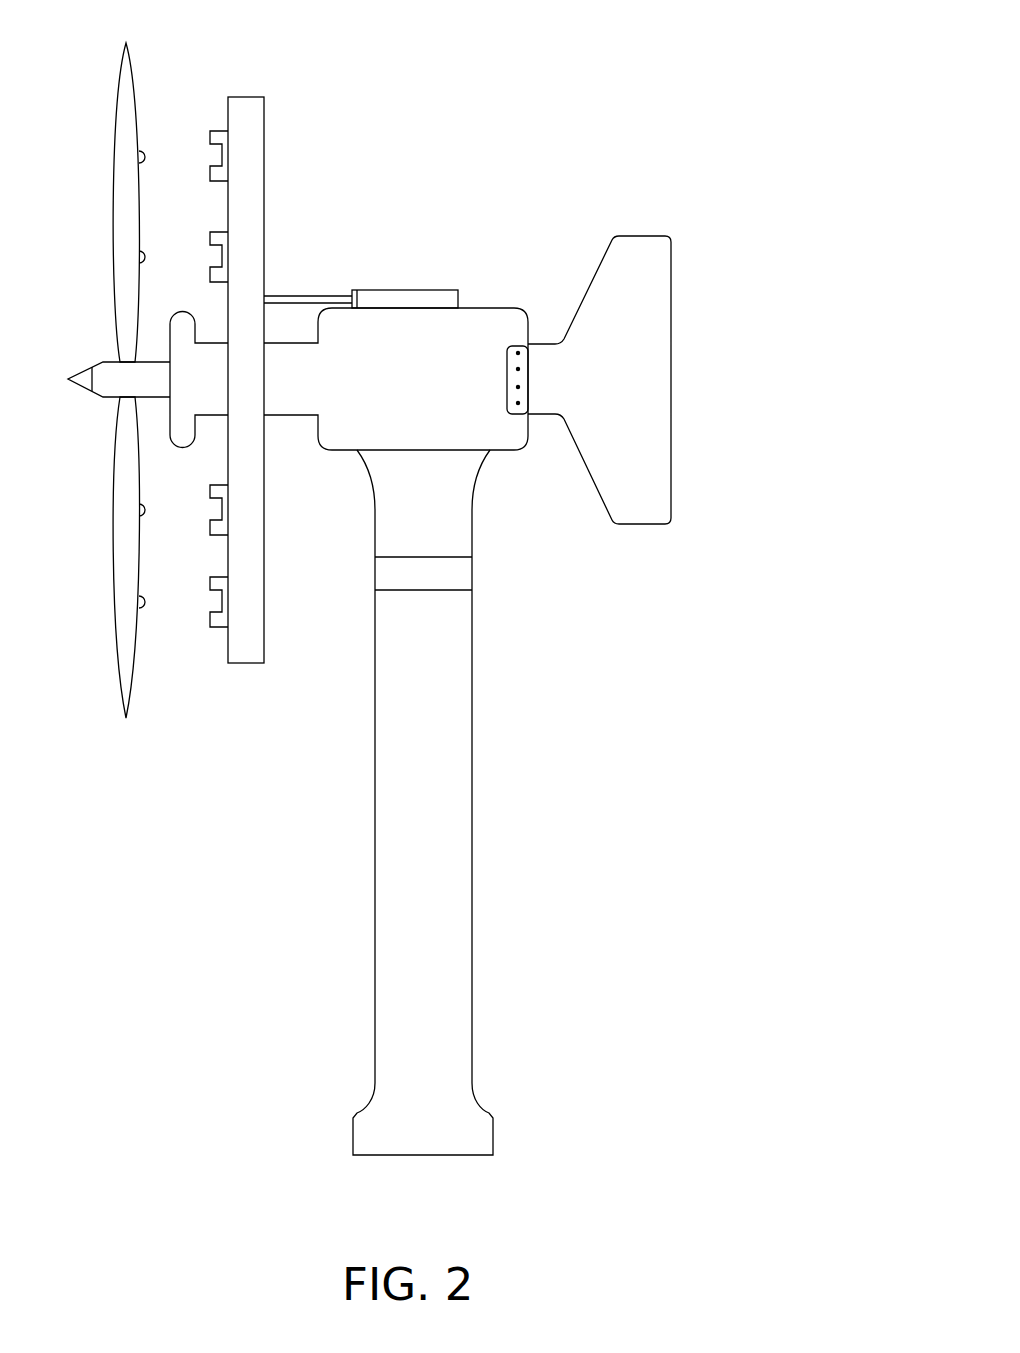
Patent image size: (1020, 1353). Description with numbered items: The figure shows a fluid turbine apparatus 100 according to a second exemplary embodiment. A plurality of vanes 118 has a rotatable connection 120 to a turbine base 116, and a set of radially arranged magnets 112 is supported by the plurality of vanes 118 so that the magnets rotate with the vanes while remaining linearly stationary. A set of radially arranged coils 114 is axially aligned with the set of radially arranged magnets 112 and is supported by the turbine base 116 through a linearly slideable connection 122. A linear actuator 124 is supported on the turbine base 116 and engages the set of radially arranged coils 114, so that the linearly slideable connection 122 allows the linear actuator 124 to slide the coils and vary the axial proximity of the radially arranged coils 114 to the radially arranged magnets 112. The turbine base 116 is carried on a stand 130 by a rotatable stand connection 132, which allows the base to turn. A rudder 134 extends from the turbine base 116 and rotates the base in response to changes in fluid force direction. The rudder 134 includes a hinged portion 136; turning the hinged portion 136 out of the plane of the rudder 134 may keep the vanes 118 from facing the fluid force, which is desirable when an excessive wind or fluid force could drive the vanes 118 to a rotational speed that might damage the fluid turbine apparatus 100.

The fluid turbine apparatus 100 is at (734, 157).
The set of radially arranged magnets 112 is at (142, 512).
The set of radially arranged coils 114 is at (220, 143).
The turbine base 116 is at (480, 330).
The plurality of vanes 118 is at (137, 88).
The rotatable connection 120 is at (170, 373).
The linearly slideable connection 122 is at (280, 437).
The linear actuator 124 is at (417, 303).
The stand 130 is at (452, 782).
The rotatable stand connection 132 is at (453, 573).
The rudder 134 is at (649, 330).
The hinged portion 136 is at (518, 405).